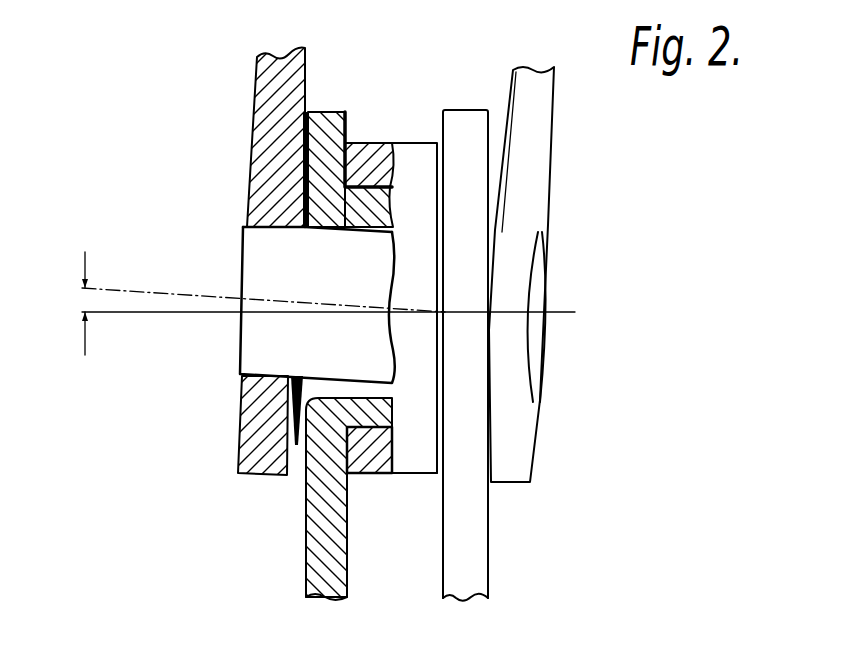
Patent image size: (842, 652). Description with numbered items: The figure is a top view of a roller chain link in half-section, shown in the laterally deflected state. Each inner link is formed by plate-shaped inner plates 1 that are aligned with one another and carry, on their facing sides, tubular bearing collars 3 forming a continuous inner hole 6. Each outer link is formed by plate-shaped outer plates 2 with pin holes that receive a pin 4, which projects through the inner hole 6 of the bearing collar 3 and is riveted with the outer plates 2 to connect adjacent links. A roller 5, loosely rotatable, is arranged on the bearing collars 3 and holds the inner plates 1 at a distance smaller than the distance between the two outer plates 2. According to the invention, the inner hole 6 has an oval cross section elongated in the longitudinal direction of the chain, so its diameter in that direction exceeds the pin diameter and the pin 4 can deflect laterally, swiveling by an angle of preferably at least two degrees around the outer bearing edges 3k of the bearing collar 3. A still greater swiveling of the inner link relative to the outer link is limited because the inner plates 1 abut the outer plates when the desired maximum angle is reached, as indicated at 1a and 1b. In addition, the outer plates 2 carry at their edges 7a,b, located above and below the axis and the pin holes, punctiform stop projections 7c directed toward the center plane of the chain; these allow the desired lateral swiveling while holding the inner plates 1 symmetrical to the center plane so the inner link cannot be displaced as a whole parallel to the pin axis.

The inner plate 1 is at (446, 478).
The abutment of inner plate at outer plate 1a is at (492, 469).
The abutment of inner plate at outer plate 1b is at (300, 120).
The outer plate 2 is at (280, 80).
The bearing collar 3 is at (363, 206).
The outer bearing edge 3k is at (313, 232).
The pin 4 is at (277, 338).
The roller 5 is at (422, 452).
The inner hole 6 is at (323, 384).
The edges of outer plate 7a,b is at (510, 259).
The stop projection 7c is at (490, 312).